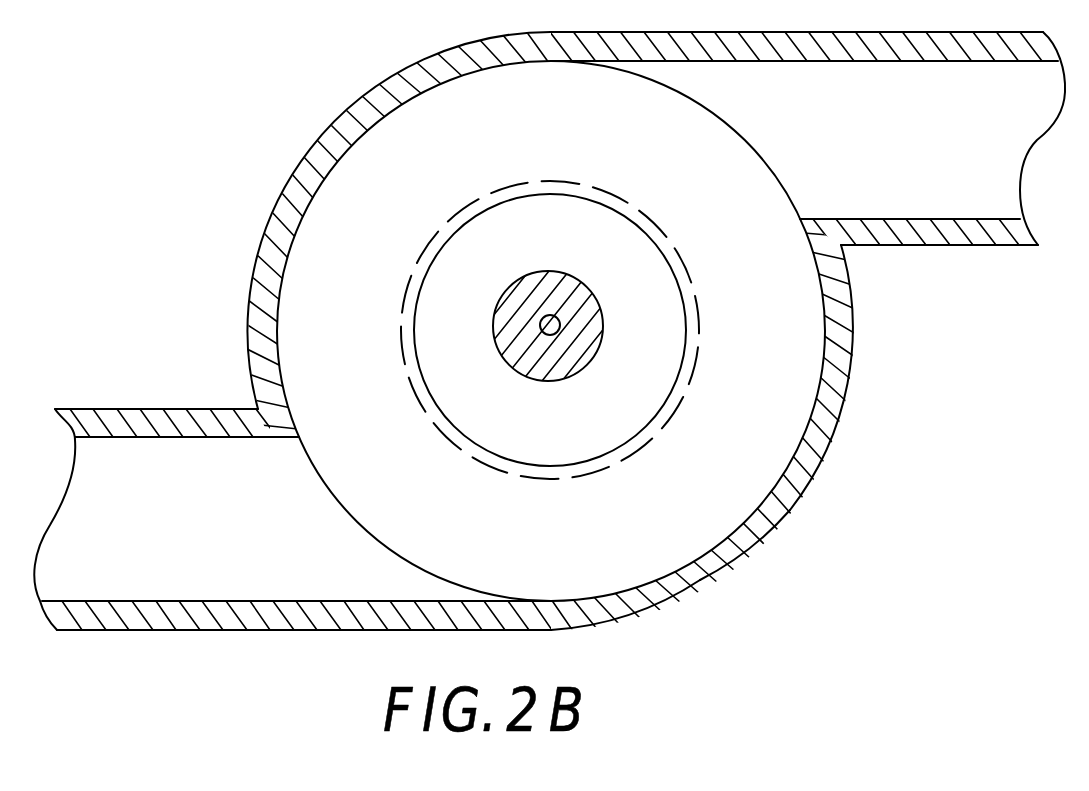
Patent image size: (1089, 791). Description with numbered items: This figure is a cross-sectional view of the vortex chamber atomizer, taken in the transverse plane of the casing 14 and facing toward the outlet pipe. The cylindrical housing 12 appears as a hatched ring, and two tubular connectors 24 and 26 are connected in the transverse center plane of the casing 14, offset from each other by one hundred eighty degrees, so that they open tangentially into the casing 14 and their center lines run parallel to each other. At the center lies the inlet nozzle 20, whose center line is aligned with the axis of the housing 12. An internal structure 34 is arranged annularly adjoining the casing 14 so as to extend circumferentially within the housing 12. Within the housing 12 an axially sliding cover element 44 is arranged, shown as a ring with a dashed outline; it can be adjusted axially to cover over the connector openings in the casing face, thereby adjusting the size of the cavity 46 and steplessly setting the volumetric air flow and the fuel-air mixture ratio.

The cylindrical housing 12 is at (236, 230).
The casing 14 is at (845, 353).
The inlet nozzle 20 is at (548, 326).
The tubular connector 24 is at (163, 625).
The tubular connector 26 is at (1003, 237).
The internal structure 34 is at (683, 547).
The cover element 44 is at (487, 230).
The cavity 46 is at (772, 460).